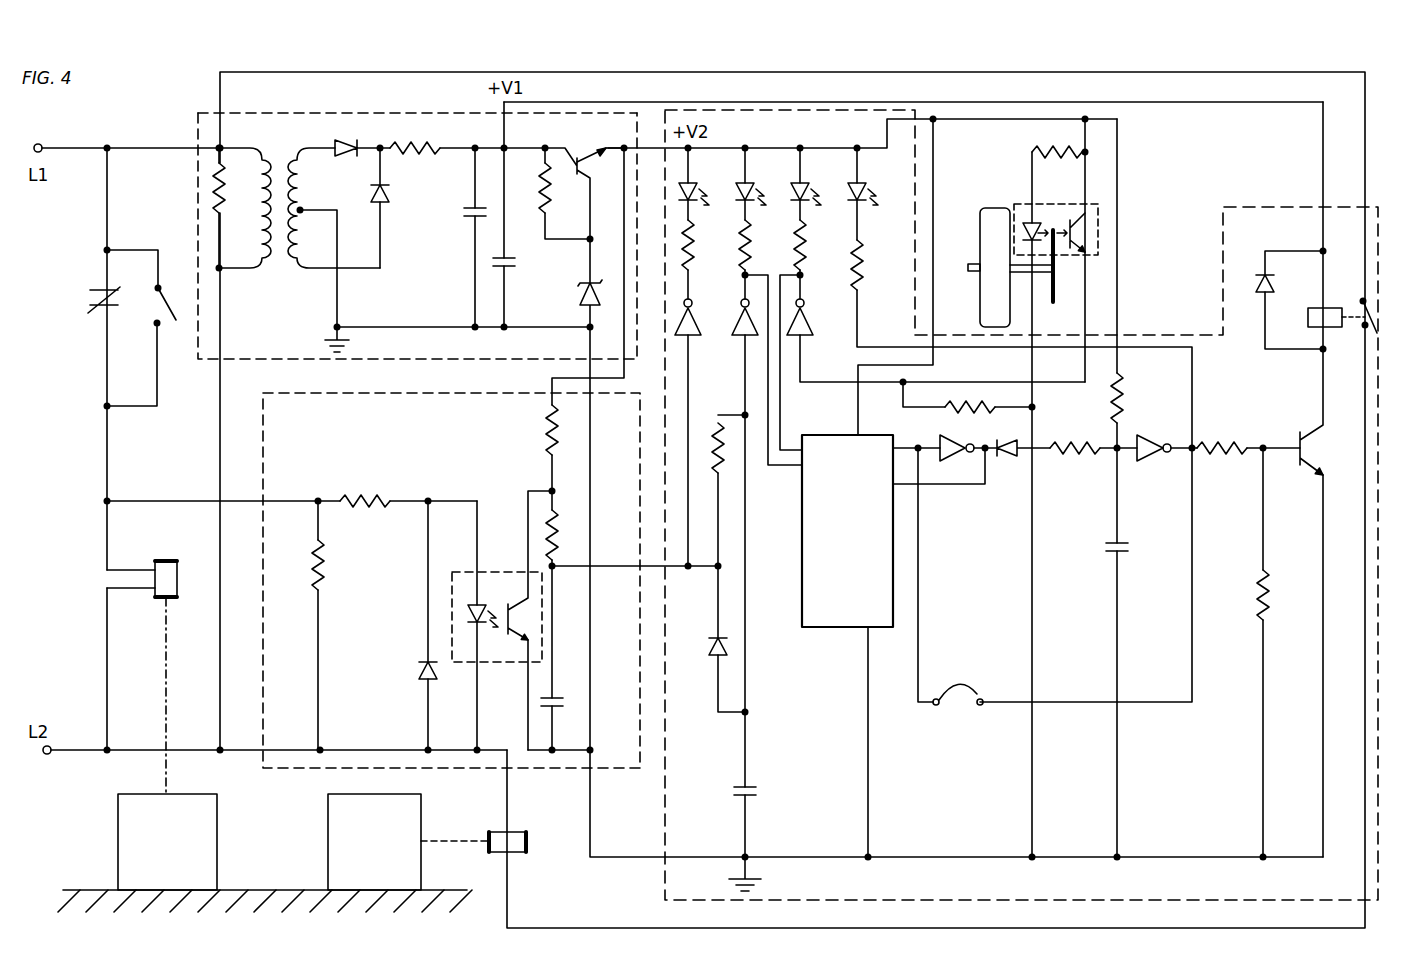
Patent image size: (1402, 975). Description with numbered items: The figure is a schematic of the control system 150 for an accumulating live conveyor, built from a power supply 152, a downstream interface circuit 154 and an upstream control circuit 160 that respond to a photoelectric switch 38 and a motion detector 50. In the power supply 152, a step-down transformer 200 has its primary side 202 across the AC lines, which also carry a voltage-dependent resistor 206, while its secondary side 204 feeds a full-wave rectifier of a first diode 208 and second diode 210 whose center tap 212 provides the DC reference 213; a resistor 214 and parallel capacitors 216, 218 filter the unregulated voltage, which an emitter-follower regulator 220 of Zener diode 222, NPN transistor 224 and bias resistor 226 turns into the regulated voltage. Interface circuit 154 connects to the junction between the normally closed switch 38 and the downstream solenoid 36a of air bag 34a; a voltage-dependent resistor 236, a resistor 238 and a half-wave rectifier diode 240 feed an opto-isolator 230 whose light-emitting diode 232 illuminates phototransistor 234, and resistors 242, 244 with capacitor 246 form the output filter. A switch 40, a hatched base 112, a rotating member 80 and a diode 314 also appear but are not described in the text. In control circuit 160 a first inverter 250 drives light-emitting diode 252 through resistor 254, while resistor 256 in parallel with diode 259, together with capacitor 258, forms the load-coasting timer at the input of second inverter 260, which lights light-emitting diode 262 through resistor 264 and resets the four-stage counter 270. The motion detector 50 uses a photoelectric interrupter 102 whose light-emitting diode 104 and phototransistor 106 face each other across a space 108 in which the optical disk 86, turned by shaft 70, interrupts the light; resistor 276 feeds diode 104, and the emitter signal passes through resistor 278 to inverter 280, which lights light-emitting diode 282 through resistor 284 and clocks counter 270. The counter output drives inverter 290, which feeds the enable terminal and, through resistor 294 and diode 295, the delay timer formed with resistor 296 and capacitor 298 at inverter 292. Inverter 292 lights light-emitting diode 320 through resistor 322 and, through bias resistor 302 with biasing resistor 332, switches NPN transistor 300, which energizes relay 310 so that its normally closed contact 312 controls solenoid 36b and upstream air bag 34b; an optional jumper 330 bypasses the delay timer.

The photoelectric switch 38 is at (95, 292).
The switch 40 is at (178, 288).
The downstream solenoid 36a is at (168, 548).
The upstream solenoid 36b is at (520, 848).
The downstream inflatable air bag 34a is at (205, 862).
The upstream inflatable air bag 34b is at (332, 860).
The ground/base 112 is at (86, 890).
The control system 150 is at (185, 145).
The power supply circuit means 152 is at (343, 113).
The downstream accumulating area interface circuit 154 is at (322, 393).
The upstream accumulating area control circuit 160 is at (820, 110).
The voltage step-down transformer 200 is at (296, 247).
The primary side 202 is at (260, 273).
The secondary side 204 is at (307, 282).
The voltage-dependent resistor 206 is at (233, 200).
The first diode 208 is at (334, 143).
The second diode 210 is at (386, 206).
The center tap 212 is at (306, 212).
The DC reference 213 is at (352, 341).
The resistor 214 is at (426, 147).
The capacitor 216 is at (466, 218).
The capacitor 218 is at (511, 268).
The emitter-follower regulator 220 is at (581, 177).
The Zener diode 222 is at (583, 282).
The NPN transistor 224 is at (585, 153).
The bias resistor 226 is at (553, 200).
The opto-isolator device 230 is at (502, 620).
The light-emitting diode 232 is at (482, 608).
The phototransistor 234 is at (512, 646).
The voltage-dependent resistor 236 is at (326, 562).
The resistor 238 is at (362, 496).
The half-wave rectifier 240 is at (419, 678).
The resistor 242 is at (546, 422).
The resistor 244 is at (560, 540).
The capacitor 246 is at (558, 697).
The first inverter 250 is at (699, 320).
The light-emitting diode 252 is at (691, 188).
The resistor 254 is at (686, 250).
The resistor 256 is at (710, 440).
The capacitor 258 is at (755, 788).
The diode 259 is at (715, 659).
The second inverter 260 is at (741, 334).
The light-emitting diode 262 is at (748, 188).
The resistor 264 is at (742, 244).
The four-stage counter 270 is at (813, 628).
The resistor 276 is at (1037, 148).
The resistor 278 is at (958, 409).
The inverter 280 is at (807, 337).
The light-emitting diode 282 is at (803, 188).
The resistor 284 is at (796, 248).
The inverter 290 is at (955, 458).
The inverter 292 is at (1162, 424).
The resistor 294 is at (1064, 446).
The diode 295 is at (1008, 459).
The resistor 296 is at (1132, 393).
The capacitor 298 is at (1126, 545).
The NPN transistor 300 is at (1298, 446).
The bias resistor 302 is at (1222, 444).
The relay 310 is at (1314, 307).
The normally closed contact 312 is at (1360, 299).
The diode 314 is at (1262, 293).
The light-emitting diode 320 is at (860, 188).
The resistor 322 is at (856, 280).
The optional jumper 330 is at (968, 686).
The resistor 332 is at (1258, 588).
The motion detector 50 is at (1051, 488).
The shaft 70 is at (968, 273).
The rotating member 80 is at (980, 251).
The optical disk 86 is at (1056, 292).
The photoelectric interrupter 102 is at (1098, 240).
The light-emitting diode transmitter 104 is at (1027, 222).
The phototransistor receiver 106 is at (1066, 224).
The space 108 is at (1040, 502).